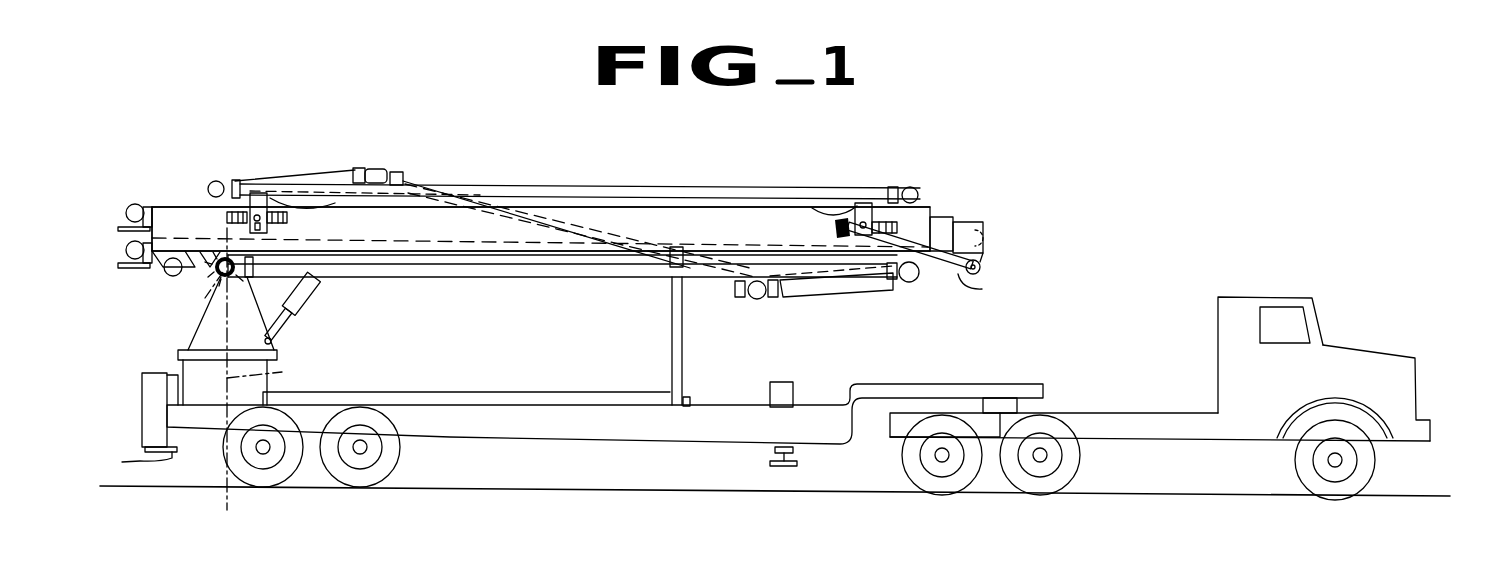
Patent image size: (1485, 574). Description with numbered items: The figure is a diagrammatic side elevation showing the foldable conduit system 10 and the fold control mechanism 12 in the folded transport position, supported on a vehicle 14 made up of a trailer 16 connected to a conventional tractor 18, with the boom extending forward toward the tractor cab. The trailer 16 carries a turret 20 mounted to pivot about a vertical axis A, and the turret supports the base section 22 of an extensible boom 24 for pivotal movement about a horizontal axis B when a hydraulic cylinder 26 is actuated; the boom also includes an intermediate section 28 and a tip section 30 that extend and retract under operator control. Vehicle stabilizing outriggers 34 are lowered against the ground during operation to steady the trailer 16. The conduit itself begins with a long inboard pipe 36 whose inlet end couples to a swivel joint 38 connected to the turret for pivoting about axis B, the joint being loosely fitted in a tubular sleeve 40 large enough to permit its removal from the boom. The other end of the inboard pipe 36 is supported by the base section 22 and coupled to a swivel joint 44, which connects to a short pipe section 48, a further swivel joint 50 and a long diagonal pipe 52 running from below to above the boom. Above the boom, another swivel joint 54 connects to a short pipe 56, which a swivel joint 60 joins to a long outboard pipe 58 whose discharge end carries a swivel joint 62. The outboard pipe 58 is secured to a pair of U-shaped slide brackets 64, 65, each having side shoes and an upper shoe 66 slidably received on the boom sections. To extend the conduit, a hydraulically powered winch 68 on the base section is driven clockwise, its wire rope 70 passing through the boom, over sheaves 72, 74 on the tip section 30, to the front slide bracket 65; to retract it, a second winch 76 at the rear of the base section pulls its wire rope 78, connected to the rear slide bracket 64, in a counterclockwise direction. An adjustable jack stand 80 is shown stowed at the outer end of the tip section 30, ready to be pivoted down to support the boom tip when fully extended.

The foldable conduit system 10 is at (681, 174).
The fold control mechanism 12 is at (836, 299).
The vehicle 14 is at (1255, 297).
The trailer 16 is at (771, 388).
The tractor 18 is at (1293, 380).
The turret 20 is at (200, 333).
The base section 22 is at (458, 264).
The extensible boom 24 is at (571, 208).
The hydraulic cylinder 26 is at (320, 292).
The intermediate section 28 is at (941, 217).
The tip section 30 is at (967, 222).
The vehicle stabilizing outriggers 34 is at (140, 463).
The inboard pipe 36 is at (565, 279).
The swivel joint 38 is at (215, 272).
The tubular sleeve 40 is at (246, 280).
The swivel joint 44 is at (918, 282).
The short pipe section 48 is at (806, 296).
The swivel joint 50 is at (759, 301).
The long diagonal pipe 52 is at (476, 200).
The swivel joint 54 is at (380, 167).
The short pipe 56 is at (318, 172).
The outboard pipe 58 is at (755, 188).
The swivel joint 60 is at (217, 180).
The swivel joint 62 is at (912, 187).
The slide bracket 64 is at (258, 193).
The slide bracket 65 is at (861, 204).
The shoe 66 is at (296, 211).
The hydraulically powered winch 68 is at (124, 251).
The wire rope 70 is at (392, 236).
The sheave 72 is at (985, 249).
The sheave 74 is at (985, 228).
The second winch 76 is at (125, 212).
The wire rope 78 is at (183, 205).
The adjustable jack stand 80 is at (982, 288).
The vertical axis A is at (263, 372).
The horizontal axis B is at (205, 298).